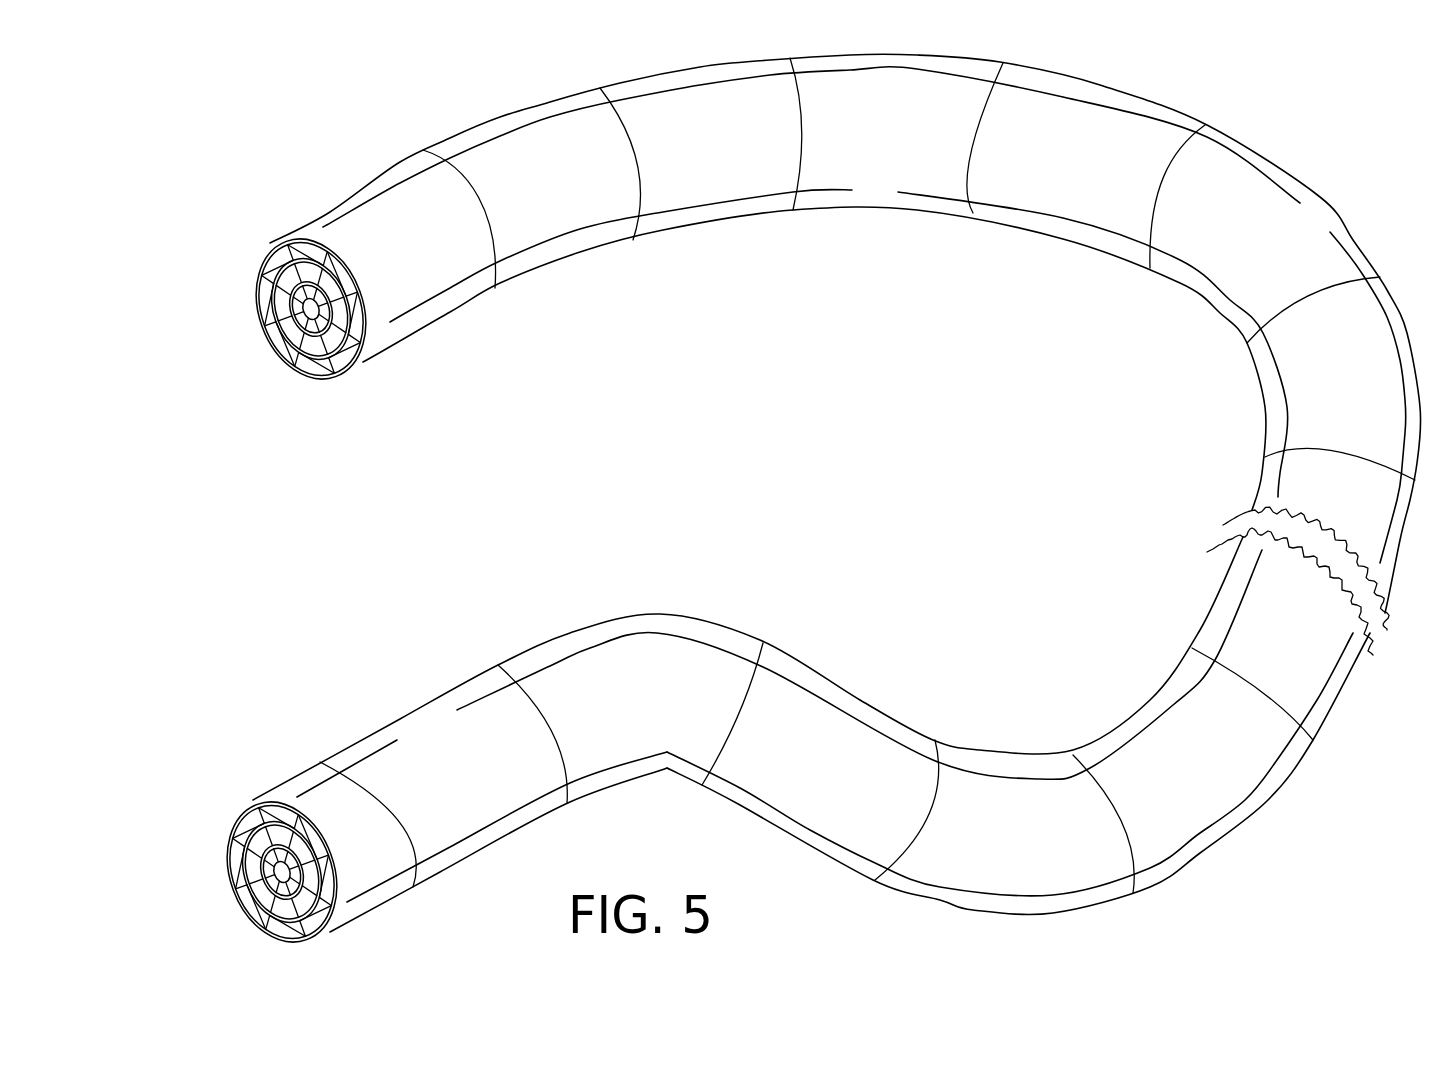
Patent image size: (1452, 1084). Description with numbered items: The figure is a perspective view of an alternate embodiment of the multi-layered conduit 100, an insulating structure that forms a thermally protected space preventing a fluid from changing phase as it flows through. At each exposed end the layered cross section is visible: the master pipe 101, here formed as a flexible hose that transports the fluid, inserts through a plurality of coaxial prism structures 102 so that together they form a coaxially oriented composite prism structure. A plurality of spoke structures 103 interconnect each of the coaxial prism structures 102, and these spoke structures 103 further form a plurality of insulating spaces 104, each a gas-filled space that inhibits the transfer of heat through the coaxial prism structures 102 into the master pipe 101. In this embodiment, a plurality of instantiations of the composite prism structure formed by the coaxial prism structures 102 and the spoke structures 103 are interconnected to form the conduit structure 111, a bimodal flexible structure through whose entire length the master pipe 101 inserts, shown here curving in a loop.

The multi-layered conduit 100 is at (230, 178).
The master pipe 101 is at (307, 312).
The coaxial prism structures 102 is at (262, 280).
The spoke structures 103 is at (342, 368).
The insulating spaces 104 is at (308, 363).
The conduit structure 111 is at (875, 167).